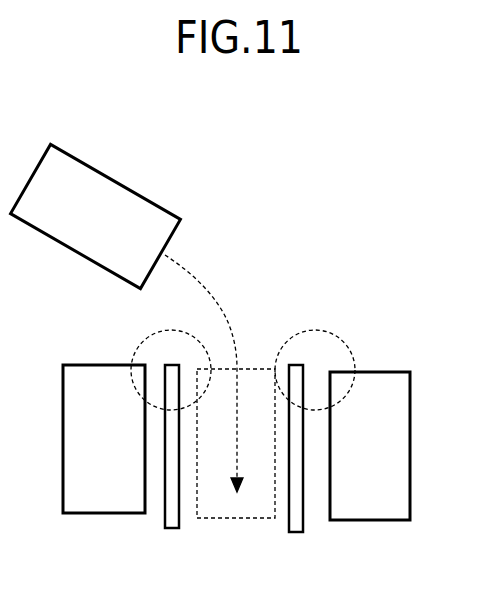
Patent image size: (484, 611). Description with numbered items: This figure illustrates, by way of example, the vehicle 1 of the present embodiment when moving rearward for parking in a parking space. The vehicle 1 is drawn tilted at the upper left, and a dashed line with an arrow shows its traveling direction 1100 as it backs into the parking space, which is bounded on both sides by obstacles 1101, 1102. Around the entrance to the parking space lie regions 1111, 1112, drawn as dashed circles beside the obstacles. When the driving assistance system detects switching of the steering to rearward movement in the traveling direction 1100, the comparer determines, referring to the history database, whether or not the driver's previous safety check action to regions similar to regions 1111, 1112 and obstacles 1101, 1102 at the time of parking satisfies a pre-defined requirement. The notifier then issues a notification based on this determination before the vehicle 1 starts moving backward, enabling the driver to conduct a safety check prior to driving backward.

The vehicle 1 is at (128, 187).
The traveling direction 1100 is at (213, 296).
The obstacle 1101 is at (368, 520).
The obstacle 1102 is at (102, 514).
The region 1111 is at (348, 347).
The region 1112 is at (140, 345).